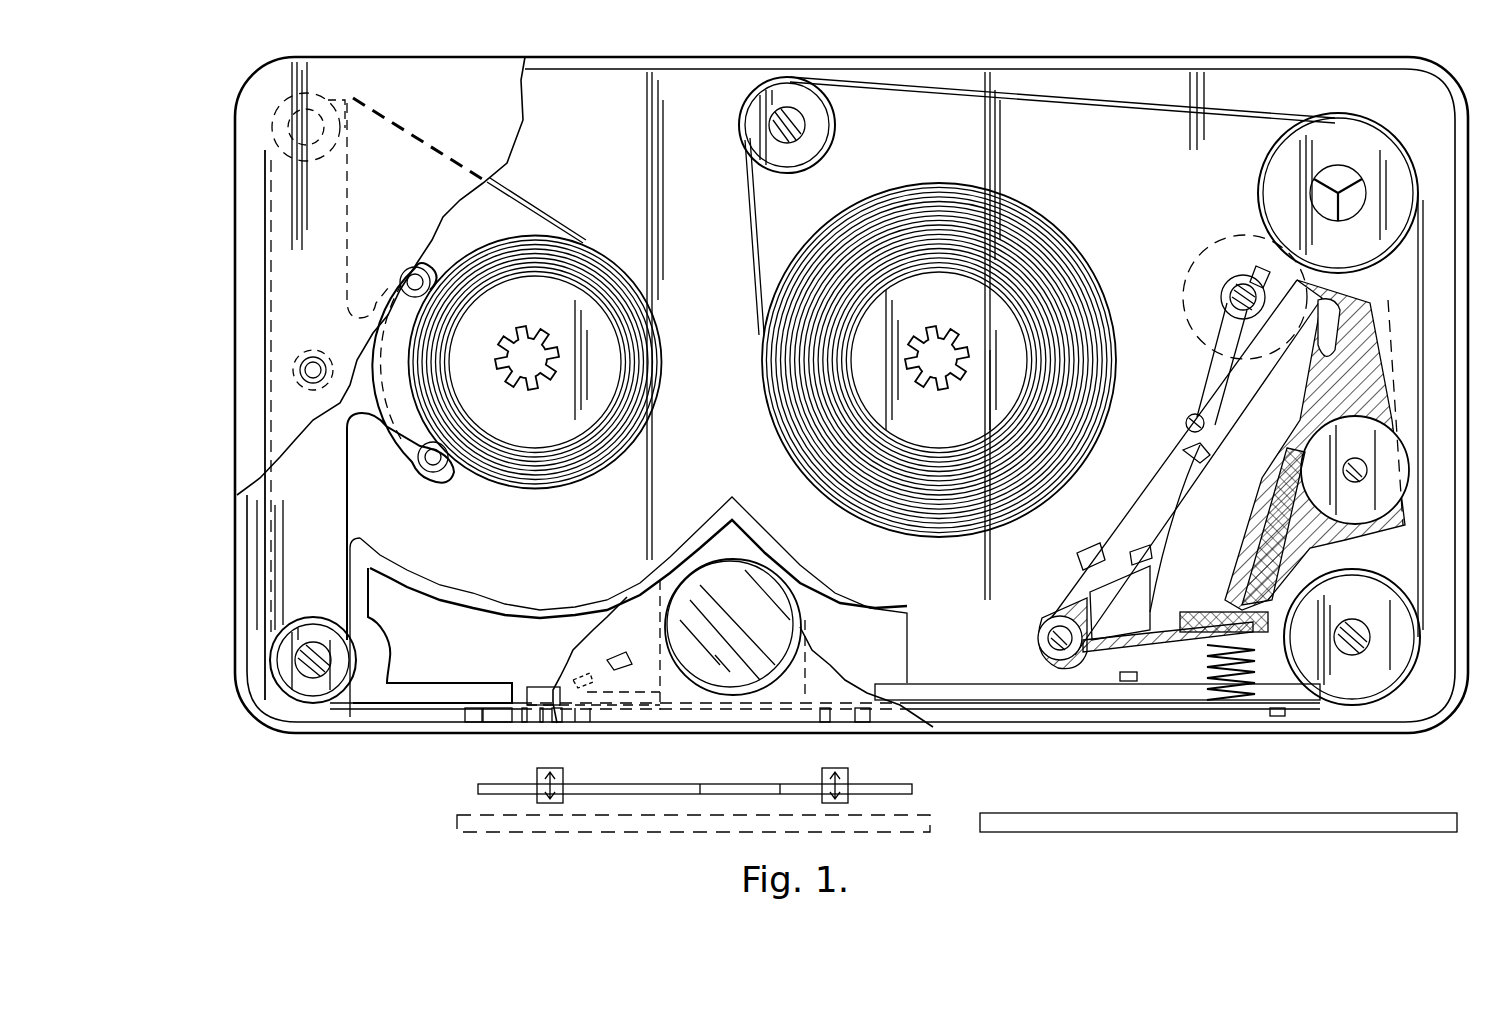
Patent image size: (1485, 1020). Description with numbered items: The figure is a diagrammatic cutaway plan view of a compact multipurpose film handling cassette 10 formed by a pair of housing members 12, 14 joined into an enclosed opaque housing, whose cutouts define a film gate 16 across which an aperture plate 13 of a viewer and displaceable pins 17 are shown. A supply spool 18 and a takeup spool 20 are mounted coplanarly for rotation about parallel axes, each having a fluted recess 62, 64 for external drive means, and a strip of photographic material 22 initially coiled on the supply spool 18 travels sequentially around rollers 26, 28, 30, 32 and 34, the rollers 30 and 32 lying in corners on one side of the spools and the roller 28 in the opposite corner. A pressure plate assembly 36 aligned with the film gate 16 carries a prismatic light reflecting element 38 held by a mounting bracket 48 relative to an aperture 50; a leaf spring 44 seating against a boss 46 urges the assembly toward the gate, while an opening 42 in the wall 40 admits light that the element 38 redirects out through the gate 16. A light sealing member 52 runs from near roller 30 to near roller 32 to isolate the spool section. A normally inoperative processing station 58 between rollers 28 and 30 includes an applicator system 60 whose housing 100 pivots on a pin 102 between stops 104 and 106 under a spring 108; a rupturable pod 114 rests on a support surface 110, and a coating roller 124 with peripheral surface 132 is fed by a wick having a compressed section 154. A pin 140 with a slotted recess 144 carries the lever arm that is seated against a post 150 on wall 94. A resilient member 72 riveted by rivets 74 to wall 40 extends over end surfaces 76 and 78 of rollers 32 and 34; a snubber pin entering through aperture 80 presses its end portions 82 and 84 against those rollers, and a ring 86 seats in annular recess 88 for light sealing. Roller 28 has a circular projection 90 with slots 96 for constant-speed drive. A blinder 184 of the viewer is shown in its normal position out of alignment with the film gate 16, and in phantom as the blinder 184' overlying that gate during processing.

The cassette 10 is at (208, 250).
The housing member 12 is at (495, 58).
The aperture plate 13 is at (858, 790).
The housing member 14 is at (624, 58).
The film gate 16 is at (515, 730).
The pins 17 is at (552, 770).
The supply spool 18 is at (916, 425).
The takeup spool 20 is at (498, 428).
The strip of photographic material 22 is at (420, 140).
The roller 26 is at (745, 118).
The roller 28 is at (1272, 183).
The roller 30 is at (1348, 680).
The roller 32 is at (360, 695).
The roller 34 is at (352, 140).
The pressure plate assembly 36 is at (790, 735).
The light reflecting element 38 is at (800, 612).
The wall 40 is at (512, 102).
The opening 42 is at (665, 615).
The leaf spring 44 is at (575, 681).
The boss 46 is at (607, 663).
The mounting bracket 48 is at (812, 668).
The aperture 50 is at (690, 715).
The light sealing member 52 is at (945, 683).
The processing station 58 is at (1396, 412).
The applicator system 60 is at (1372, 338).
The fluted recess 62 is at (948, 360).
The fluted recess 64 is at (515, 340).
The resilient member 72 is at (340, 514).
The rivets 74 is at (413, 272).
The end surface 76 is at (305, 700).
The end surface 78 is at (300, 62).
The aperture 80 is at (308, 385).
The end portion 82 is at (365, 640).
The end portion 84 is at (350, 100).
The ring 86 is at (313, 355).
The annular recess 88 is at (306, 355).
The circular projection 90 is at (1352, 175).
The wall 94 is at (606, 141).
The slots 96 is at (1330, 172).
The housing 100 is at (1125, 658).
The pin 102 is at (1040, 632).
The stop 104 is at (1128, 682).
The stop 106 is at (1078, 558).
The spring 108 is at (1228, 700).
The support surface 110 is at (1350, 298).
The rupturable pod 114 is at (1322, 292).
The coating roller 124 is at (1320, 468).
The peripheral surface 132 is at (1300, 425).
The pin 140 is at (1215, 265).
The slotted recess 144 is at (1252, 270).
The post 150 is at (1185, 425).
The compressed section 154 is at (1265, 530).
The blinder 184 is at (1218, 807).
The strip 184' is at (676, 807).